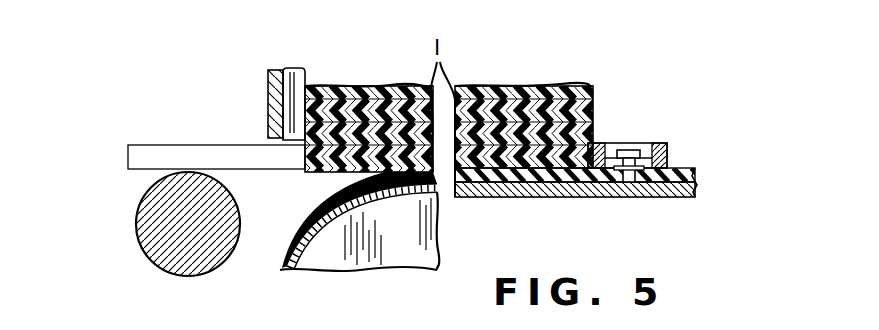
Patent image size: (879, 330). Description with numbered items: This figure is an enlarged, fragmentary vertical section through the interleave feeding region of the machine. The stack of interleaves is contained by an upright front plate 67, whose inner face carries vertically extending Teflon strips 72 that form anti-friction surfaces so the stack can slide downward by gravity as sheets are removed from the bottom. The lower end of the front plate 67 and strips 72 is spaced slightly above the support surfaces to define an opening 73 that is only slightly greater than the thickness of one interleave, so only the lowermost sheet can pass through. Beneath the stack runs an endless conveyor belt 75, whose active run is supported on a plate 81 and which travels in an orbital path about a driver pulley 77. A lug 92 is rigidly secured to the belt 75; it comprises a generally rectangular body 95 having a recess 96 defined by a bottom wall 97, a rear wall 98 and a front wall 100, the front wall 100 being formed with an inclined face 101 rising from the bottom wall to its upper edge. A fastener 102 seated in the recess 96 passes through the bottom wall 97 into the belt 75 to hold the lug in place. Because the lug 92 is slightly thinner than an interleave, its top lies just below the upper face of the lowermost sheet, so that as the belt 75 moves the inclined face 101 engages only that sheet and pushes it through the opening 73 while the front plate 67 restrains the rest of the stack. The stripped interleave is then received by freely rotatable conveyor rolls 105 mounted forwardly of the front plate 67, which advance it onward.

The front plate 67 is at (268, 95).
The Teflon strips 72 is at (297, 68).
The opening 73 is at (300, 145).
The endless conveyor belt 75 is at (672, 178).
The driver pulley 77 is at (385, 257).
The support plate 81 is at (543, 190).
The lug 92 is at (657, 130).
The body 95 is at (667, 142).
The recess 96 is at (644, 150).
The bottom wall 97 is at (613, 182).
The rear wall 98 is at (663, 113).
The front wall 100 is at (598, 143).
The inclined face 101 is at (583, 170).
The fastener 102 is at (637, 170).
The conveyor rolls 105 is at (145, 232).